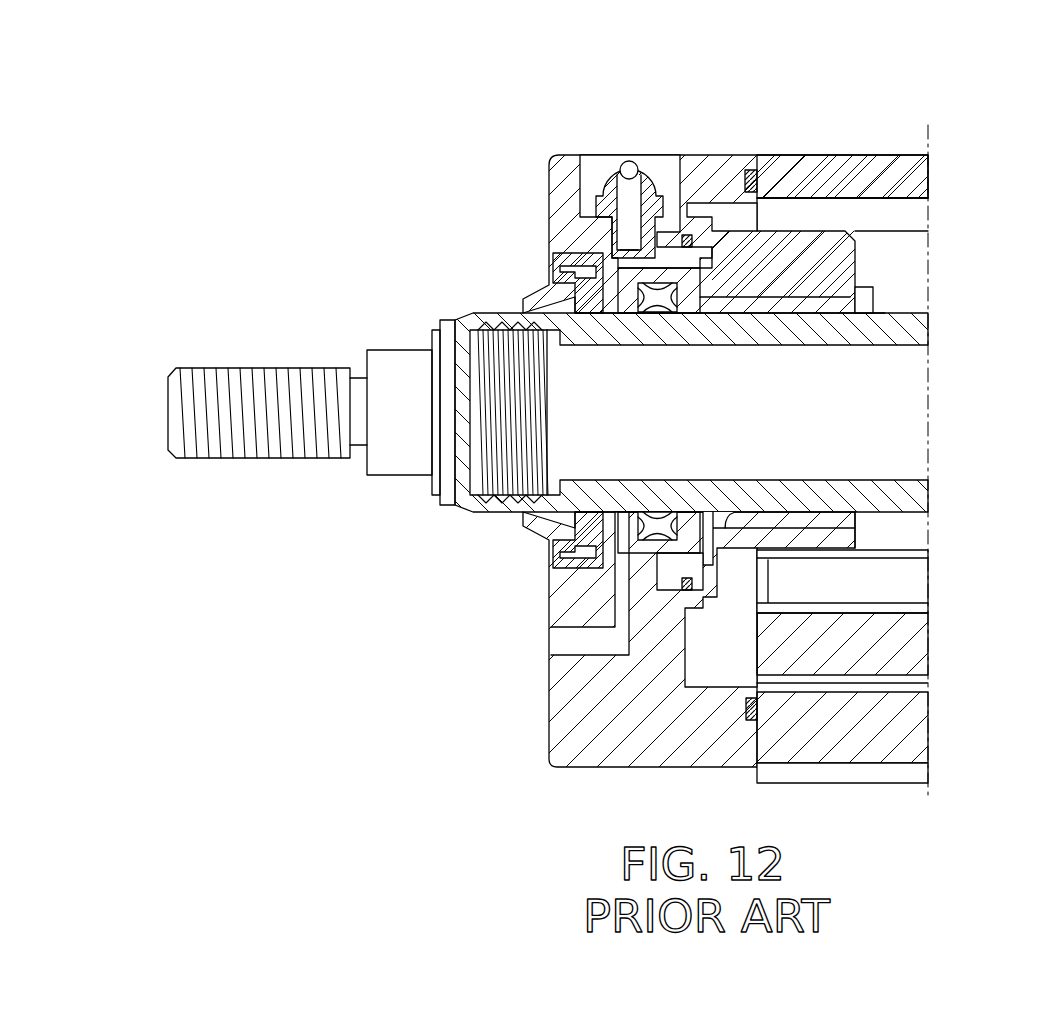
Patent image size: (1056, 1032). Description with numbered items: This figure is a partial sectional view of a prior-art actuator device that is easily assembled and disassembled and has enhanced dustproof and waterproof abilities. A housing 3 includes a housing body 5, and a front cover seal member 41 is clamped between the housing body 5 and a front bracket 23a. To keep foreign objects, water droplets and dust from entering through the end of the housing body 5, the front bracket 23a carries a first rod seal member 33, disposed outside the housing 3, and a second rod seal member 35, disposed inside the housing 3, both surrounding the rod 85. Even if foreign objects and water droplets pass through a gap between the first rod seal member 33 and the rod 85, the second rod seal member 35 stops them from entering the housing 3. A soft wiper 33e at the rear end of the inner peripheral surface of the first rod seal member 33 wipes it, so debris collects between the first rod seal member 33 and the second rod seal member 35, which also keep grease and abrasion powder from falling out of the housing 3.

The housing 3 is at (890, 150).
The housing body 5 is at (822, 160).
The front cover seal member 41 is at (752, 168).
The second rod seal member 35 is at (665, 285).
The rod 85 is at (885, 313).
The first rod seal member 33 is at (545, 553).
The soft wiper 33e is at (588, 538).
The front bracket 23a is at (562, 720).